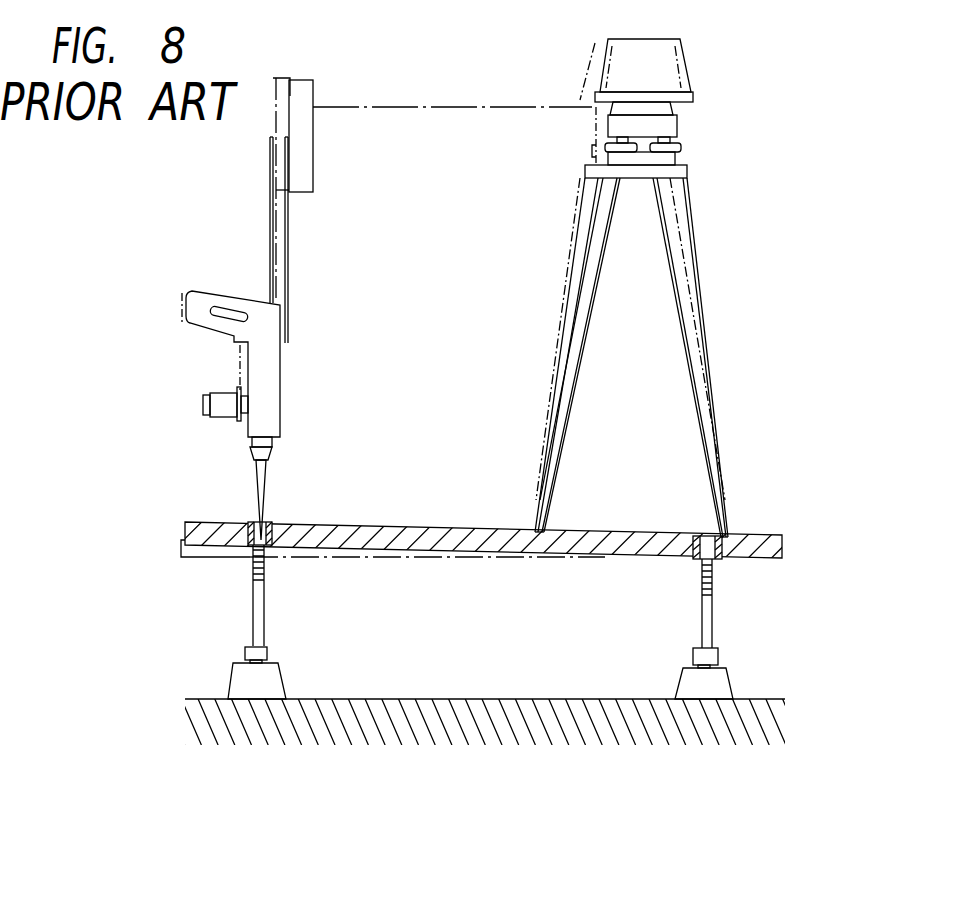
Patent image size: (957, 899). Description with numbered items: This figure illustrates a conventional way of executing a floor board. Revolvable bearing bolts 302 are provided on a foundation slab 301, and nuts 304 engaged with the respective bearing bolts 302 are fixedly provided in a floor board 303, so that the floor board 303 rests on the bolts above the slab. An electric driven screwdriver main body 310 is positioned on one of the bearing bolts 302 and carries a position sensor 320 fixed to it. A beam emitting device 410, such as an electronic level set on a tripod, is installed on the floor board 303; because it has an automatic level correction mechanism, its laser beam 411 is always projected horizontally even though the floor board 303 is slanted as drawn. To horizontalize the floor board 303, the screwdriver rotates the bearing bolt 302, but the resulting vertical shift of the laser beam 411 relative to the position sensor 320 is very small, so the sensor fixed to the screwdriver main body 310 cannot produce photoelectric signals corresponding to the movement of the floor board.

The foundation slab 301 is at (412, 699).
The bearing bolt 302 is at (265, 610).
The floor board 303 is at (410, 527).
The nut 304 is at (256, 520).
The electric driven screwdriver main body 310 is at (281, 376).
The position sensor 320 is at (313, 190).
The beam emitting device 410 is at (703, 70).
The laser beam 411 is at (424, 105).